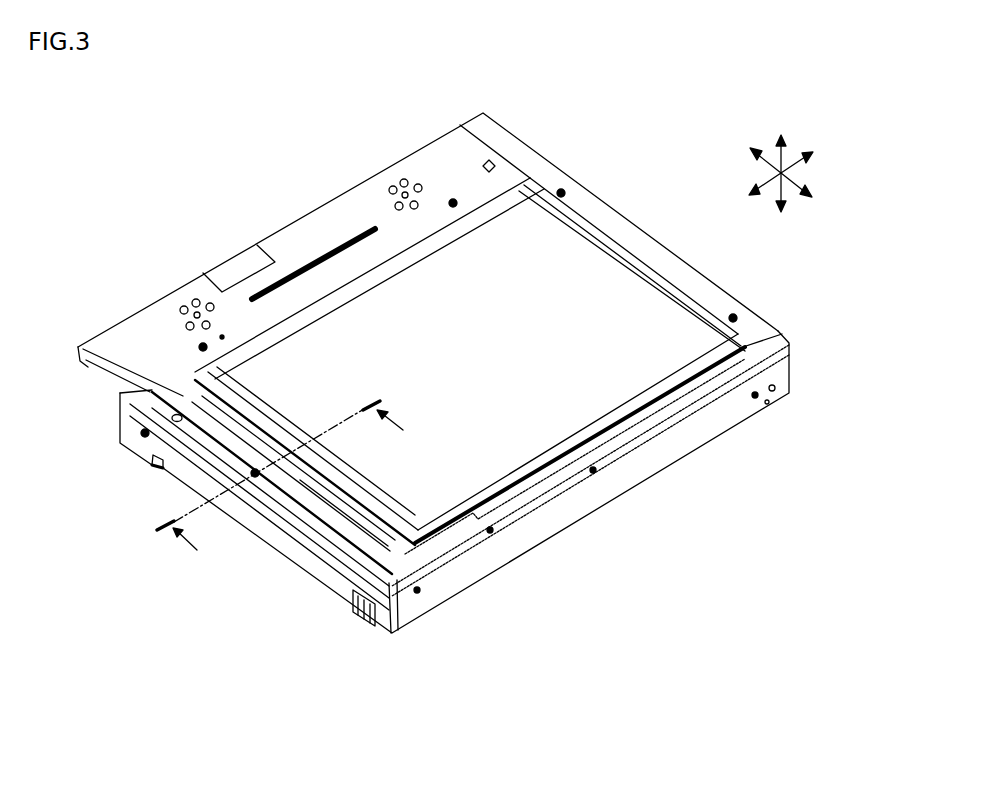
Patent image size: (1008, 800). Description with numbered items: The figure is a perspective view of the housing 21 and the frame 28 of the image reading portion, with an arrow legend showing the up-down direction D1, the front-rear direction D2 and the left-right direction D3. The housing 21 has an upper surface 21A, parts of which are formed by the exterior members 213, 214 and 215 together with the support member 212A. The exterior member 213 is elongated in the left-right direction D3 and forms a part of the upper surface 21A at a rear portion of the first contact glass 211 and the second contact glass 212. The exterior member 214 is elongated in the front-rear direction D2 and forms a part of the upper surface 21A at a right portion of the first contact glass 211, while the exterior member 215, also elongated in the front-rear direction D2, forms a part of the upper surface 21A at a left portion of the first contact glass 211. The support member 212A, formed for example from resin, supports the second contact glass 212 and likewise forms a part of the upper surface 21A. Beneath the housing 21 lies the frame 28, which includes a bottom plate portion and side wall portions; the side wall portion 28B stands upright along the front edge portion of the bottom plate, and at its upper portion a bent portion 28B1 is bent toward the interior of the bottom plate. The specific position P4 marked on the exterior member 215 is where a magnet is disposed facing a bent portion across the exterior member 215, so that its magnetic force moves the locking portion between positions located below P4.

The housing 21 is at (198, 184).
The upper surface 21A is at (466, 290).
The first contact glass 211 is at (445, 358).
The second contact glass 212 is at (322, 497).
The support member 212A is at (238, 408).
The exterior member 213 is at (305, 238).
The exterior member 214 is at (625, 238).
The exterior member 215 is at (328, 530).
The frame 28 is at (573, 530).
The side wall portion 28B is at (588, 494).
The bent portion 28B1 is at (563, 473).
The specific position P4 is at (256, 470).
The up-down direction D1 is at (778, 150).
The front-rear direction D2 is at (802, 184).
The left-right direction D3 is at (766, 190).